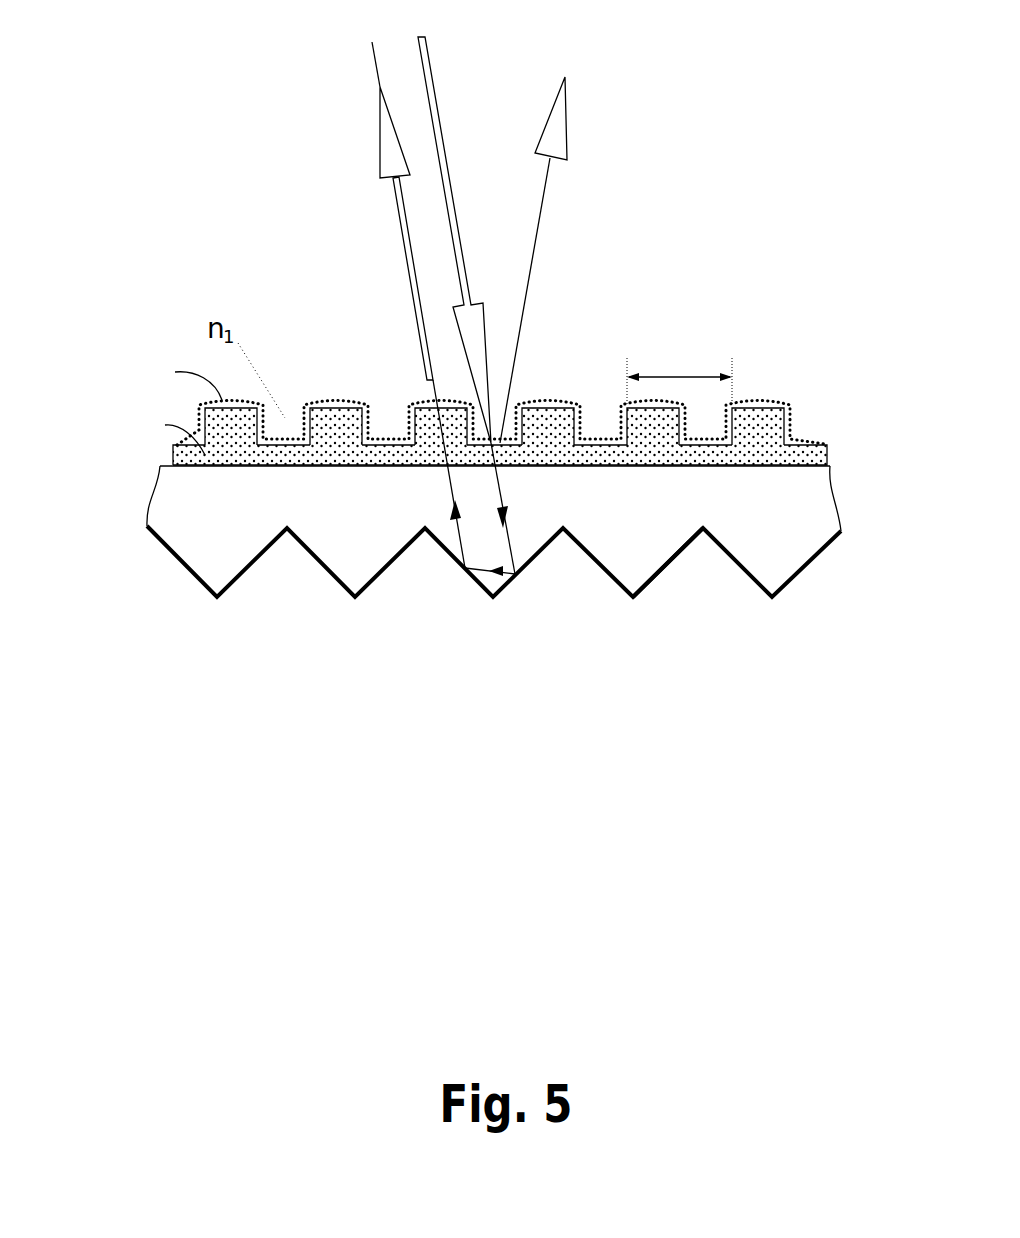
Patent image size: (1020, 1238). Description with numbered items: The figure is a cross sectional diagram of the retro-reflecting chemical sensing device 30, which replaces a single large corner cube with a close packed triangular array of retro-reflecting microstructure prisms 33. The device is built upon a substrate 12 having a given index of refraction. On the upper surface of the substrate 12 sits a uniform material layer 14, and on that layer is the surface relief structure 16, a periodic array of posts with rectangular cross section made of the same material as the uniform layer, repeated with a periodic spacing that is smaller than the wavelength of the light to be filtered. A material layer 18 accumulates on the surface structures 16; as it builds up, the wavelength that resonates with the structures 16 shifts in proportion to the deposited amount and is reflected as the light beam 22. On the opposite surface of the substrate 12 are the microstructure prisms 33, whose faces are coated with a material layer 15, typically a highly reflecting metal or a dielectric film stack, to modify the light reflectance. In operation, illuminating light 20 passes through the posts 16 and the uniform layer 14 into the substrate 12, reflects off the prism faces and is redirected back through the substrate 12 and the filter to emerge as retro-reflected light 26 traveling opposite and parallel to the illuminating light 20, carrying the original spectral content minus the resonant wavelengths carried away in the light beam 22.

The substrate 12 is at (813, 495).
The uniform material layer 14 is at (815, 453).
The material layer 15 is at (802, 573).
The surface relief structure 16 is at (784, 418).
The material layer 18 is at (758, 400).
The illuminating light 20 is at (431, 65).
The light beam 22 is at (570, 125).
The retro-reflected light 26 is at (380, 148).
The chemical sensing device 30 is at (132, 491).
The retro-reflecting microstructure prisms 33 is at (637, 572).